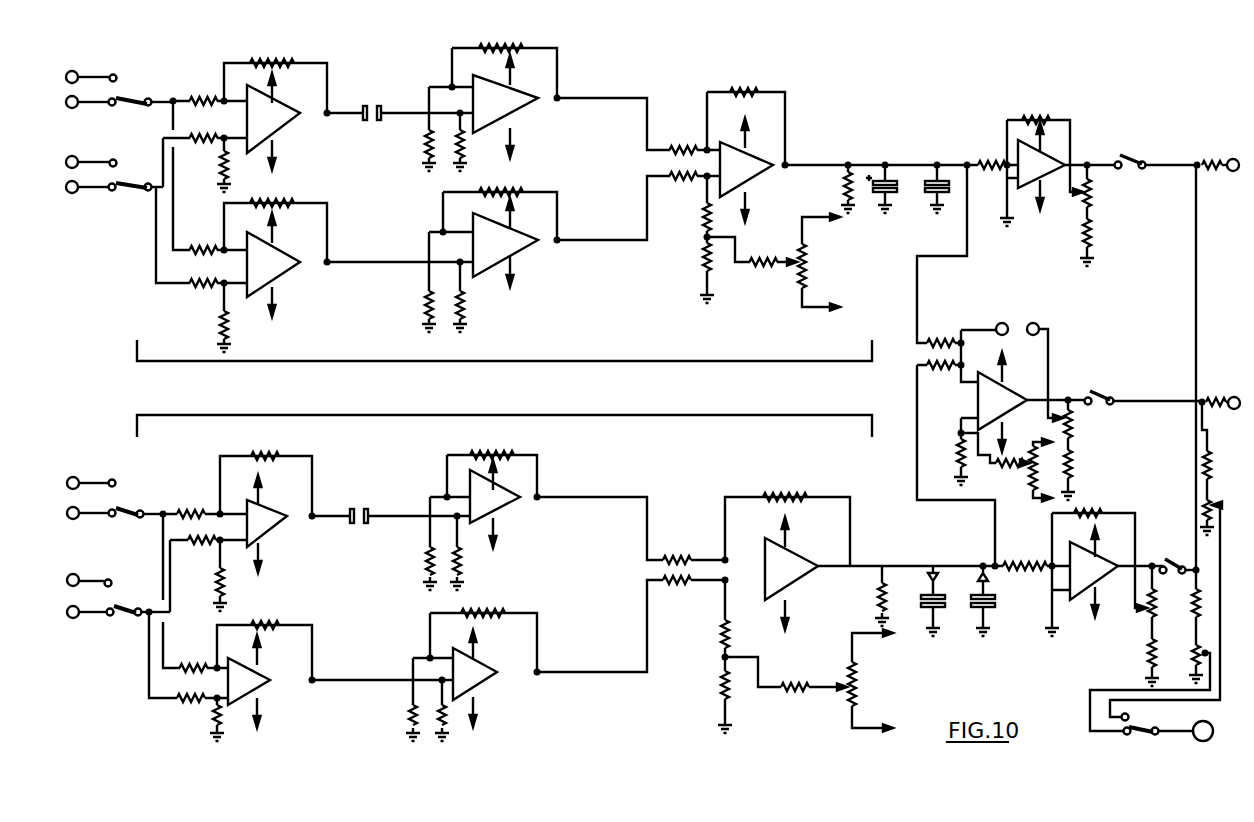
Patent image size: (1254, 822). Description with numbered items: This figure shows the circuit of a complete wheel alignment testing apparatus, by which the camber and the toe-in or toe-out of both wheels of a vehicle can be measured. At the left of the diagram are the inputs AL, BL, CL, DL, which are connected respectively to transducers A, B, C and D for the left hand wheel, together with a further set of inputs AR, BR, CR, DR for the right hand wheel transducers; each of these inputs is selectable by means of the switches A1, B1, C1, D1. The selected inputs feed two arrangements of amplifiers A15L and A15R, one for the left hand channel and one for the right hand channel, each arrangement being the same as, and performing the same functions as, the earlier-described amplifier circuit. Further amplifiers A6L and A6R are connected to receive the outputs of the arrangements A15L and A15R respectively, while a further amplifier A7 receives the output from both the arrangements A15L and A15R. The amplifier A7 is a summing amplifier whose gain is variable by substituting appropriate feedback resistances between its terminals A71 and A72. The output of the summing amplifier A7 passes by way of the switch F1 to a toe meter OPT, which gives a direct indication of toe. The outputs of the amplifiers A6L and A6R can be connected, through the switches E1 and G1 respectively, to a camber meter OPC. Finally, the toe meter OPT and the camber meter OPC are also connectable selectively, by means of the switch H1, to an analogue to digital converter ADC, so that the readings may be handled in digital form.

The input AL is at (87, 67).
The input BL is at (87, 94).
The input CL is at (87, 151).
The input DL is at (87, 179).
The input AR is at (87, 471).
The input BR is at (87, 503).
The input CR is at (85, 567).
The input DR is at (89, 602).
The switch A1 is at (141, 87).
The switch B1 is at (136, 175).
The switch C1 is at (136, 499).
The switch D1 is at (138, 598).
The switch E1 is at (1156, 150).
The switch F1 is at (1144, 388).
The switch G1 is at (1178, 556).
The switch H1 is at (1158, 716).
The arrangement of amplifiers A15L is at (504, 215).
The arrangement of amplifiers A15R is at (504, 567).
The amplifier A6L is at (1030, 178).
The amplifier A6R is at (1082, 583).
The summing amplifier A7 is at (1018, 398).
The terminal A71 is at (1000, 318).
The terminal A72 is at (1052, 318).
The camber meter OPC is at (1220, 175).
The toe meter OPT is at (1177, 545).
The analogue to digital converter ADC is at (1199, 719).